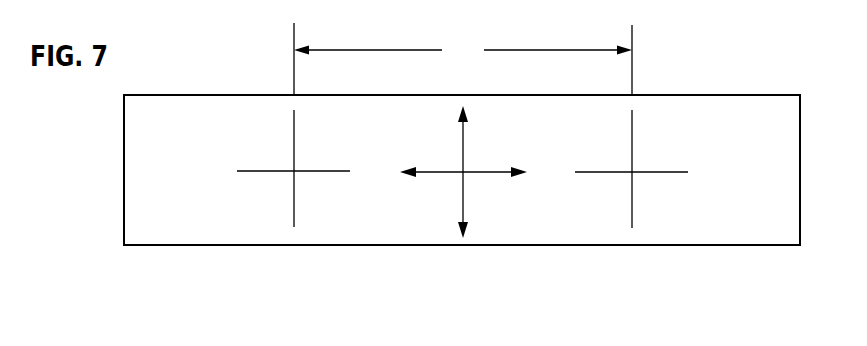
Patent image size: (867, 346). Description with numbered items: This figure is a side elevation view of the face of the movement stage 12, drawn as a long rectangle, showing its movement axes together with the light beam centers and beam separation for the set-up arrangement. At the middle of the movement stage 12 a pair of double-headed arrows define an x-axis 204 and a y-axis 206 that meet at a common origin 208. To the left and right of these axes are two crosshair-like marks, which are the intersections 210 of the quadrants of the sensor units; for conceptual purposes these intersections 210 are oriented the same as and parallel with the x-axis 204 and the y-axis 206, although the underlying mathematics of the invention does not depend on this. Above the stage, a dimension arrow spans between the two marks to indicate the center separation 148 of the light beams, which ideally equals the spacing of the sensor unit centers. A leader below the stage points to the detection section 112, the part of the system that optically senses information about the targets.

The movement stage 12 is at (165, 124).
The center separation 148 is at (463, 59).
The intersections of the quadrants 210 is at (294, 140).
The y-axis 206 is at (462, 153).
The x-axis 204 is at (446, 173).
The common origin 208 is at (466, 174).
The detection section 112 is at (462, 246).